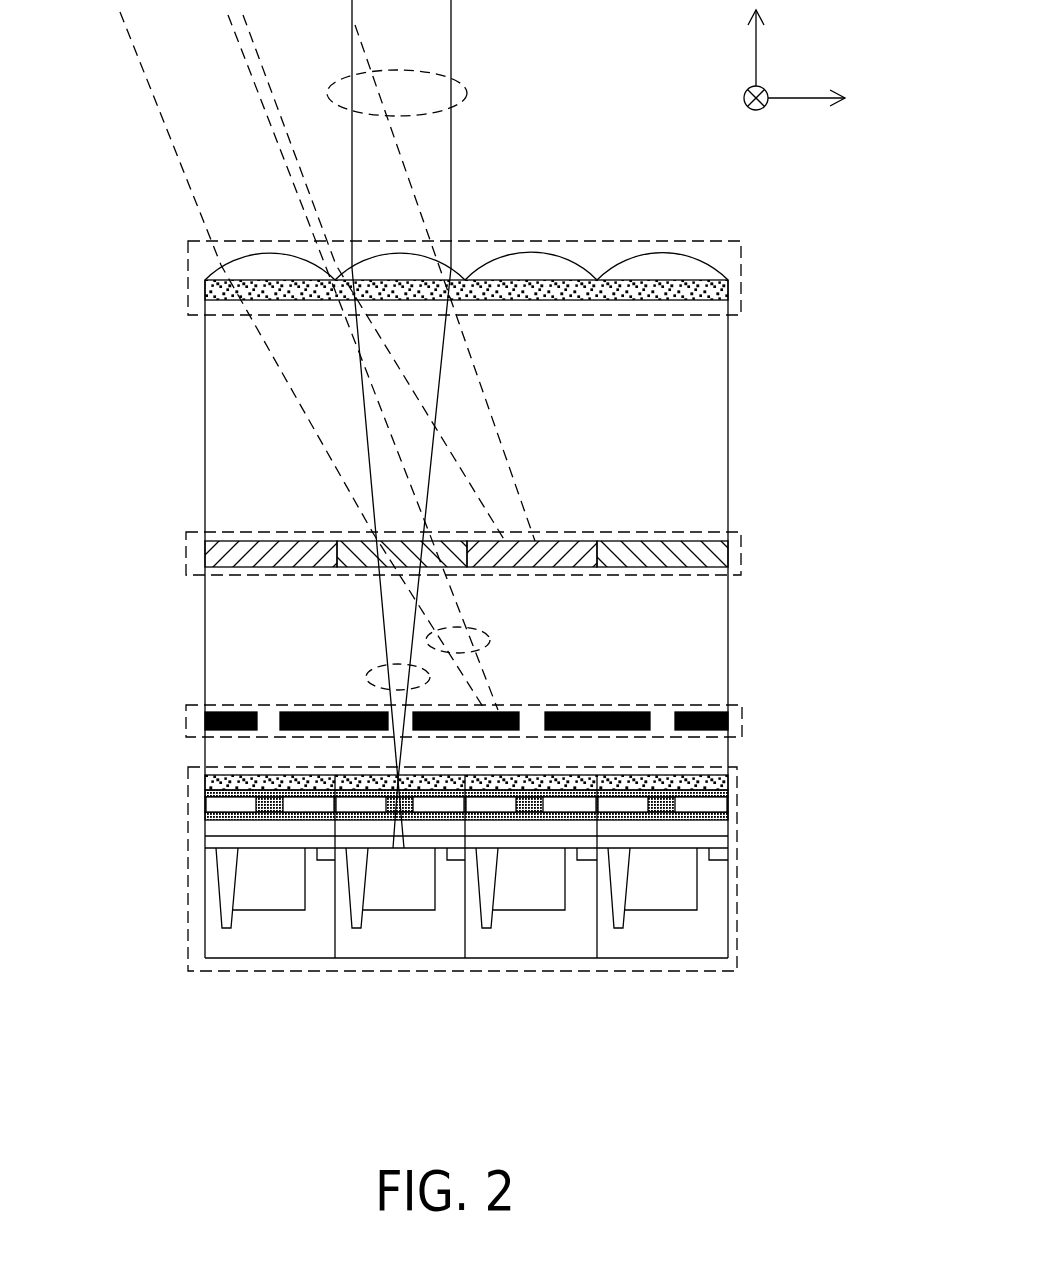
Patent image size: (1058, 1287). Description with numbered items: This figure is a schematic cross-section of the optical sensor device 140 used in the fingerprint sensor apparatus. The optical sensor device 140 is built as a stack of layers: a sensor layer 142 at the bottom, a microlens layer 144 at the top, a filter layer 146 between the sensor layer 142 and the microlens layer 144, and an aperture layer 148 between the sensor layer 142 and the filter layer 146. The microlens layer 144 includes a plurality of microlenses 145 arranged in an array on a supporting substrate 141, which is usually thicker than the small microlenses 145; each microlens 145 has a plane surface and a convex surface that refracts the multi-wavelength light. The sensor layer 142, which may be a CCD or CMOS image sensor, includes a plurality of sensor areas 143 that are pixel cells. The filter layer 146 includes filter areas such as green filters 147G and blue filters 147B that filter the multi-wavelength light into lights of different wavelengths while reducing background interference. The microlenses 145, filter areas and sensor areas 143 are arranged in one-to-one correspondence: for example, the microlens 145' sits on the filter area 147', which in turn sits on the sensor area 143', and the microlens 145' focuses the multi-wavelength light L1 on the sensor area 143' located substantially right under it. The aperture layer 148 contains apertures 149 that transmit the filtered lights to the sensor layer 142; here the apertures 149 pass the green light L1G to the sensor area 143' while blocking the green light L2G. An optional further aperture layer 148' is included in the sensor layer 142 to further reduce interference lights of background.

The optical sensor device 140 is at (812, 1069).
The substrate 141 is at (733, 290).
The sensor layer 142 is at (188, 878).
The sensor area 143 is at (668, 949).
The sensor area 143' is at (405, 951).
The microlens layer 144 is at (188, 264).
The microlens 145 is at (662, 225).
The microlens 145' is at (437, 224).
The filter layer 146 is at (185, 545).
The green filter 147G is at (262, 540).
The blue filter 147B is at (662, 541).
The filter area 147' is at (287, 584).
The aperture layer 148 is at (437, 699).
The aperture layer 148' is at (510, 811).
The aperture 149 is at (606, 712).
The multi-wavelength light L1 is at (458, 79).
The green light L1G is at (366, 670).
The green light L2G is at (487, 629).